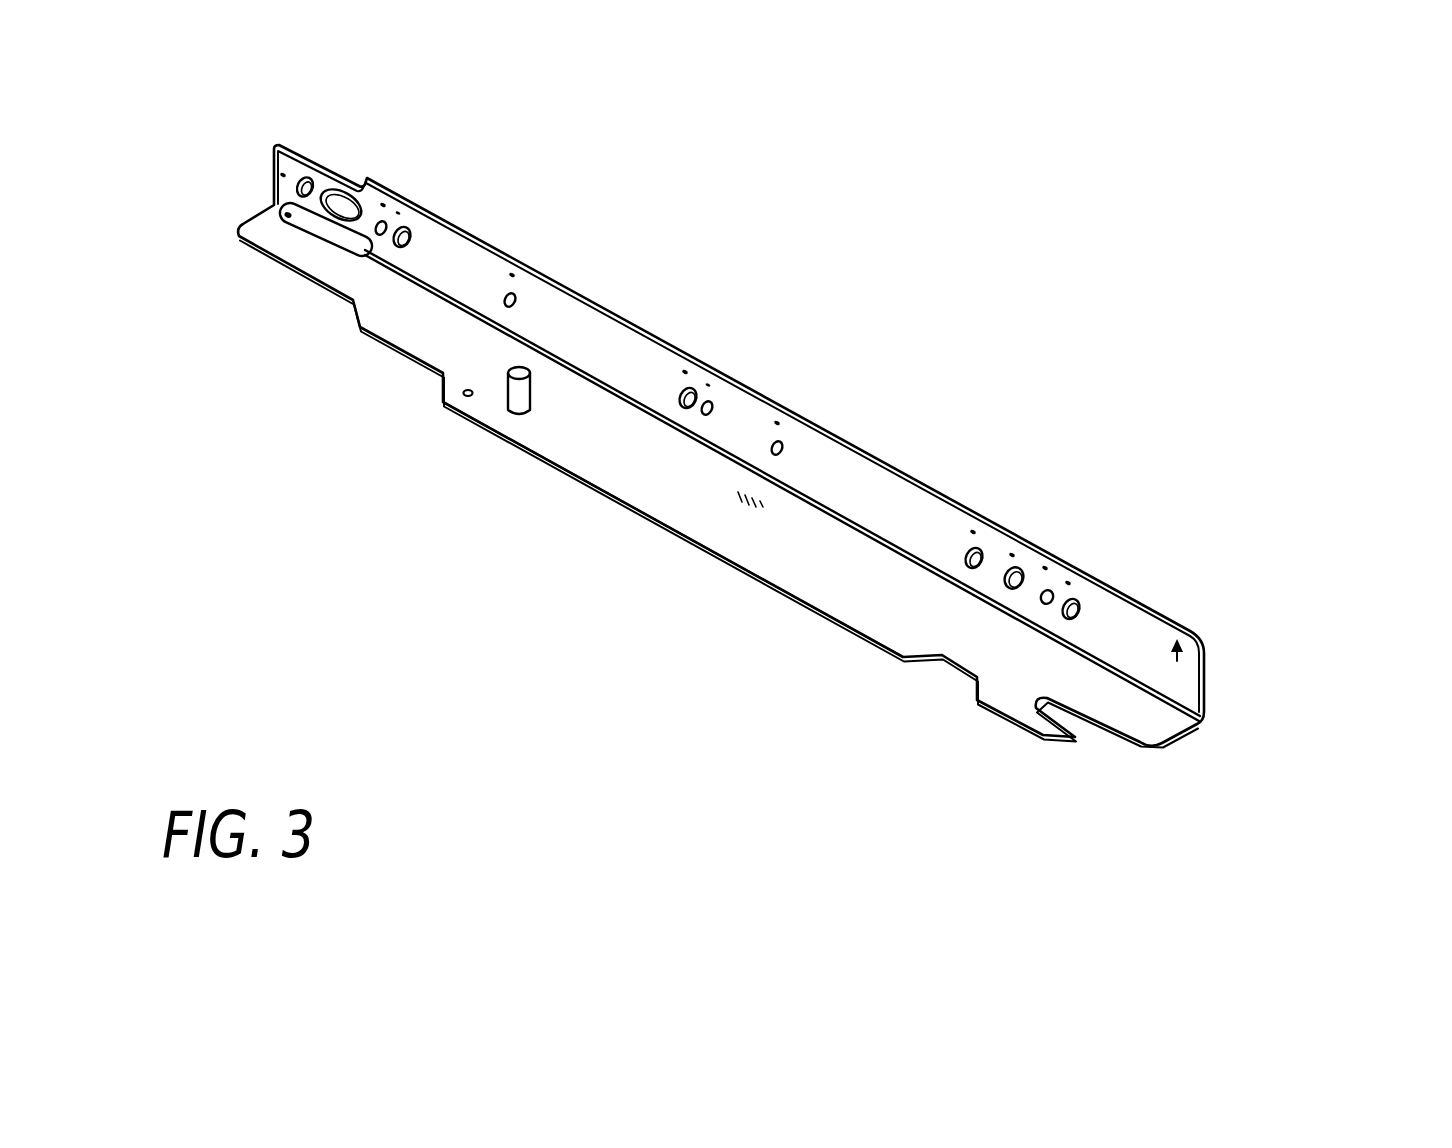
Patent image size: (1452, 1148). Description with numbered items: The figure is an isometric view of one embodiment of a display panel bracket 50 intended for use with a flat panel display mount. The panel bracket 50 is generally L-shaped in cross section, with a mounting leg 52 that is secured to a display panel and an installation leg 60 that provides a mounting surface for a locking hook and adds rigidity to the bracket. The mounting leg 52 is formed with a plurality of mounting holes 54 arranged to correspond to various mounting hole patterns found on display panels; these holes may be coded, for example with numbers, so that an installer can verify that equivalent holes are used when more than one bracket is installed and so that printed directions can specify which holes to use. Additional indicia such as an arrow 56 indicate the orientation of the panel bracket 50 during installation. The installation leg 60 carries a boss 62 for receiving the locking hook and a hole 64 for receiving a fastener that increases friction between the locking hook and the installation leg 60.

The display panel bracket 50 is at (822, 358).
The mounting leg 52 is at (1153, 638).
The mounting holes 54 is at (408, 232).
The arrow 56 is at (1183, 651).
The installation leg 60 is at (855, 587).
The boss 62 is at (518, 396).
The hole 64 is at (466, 393).